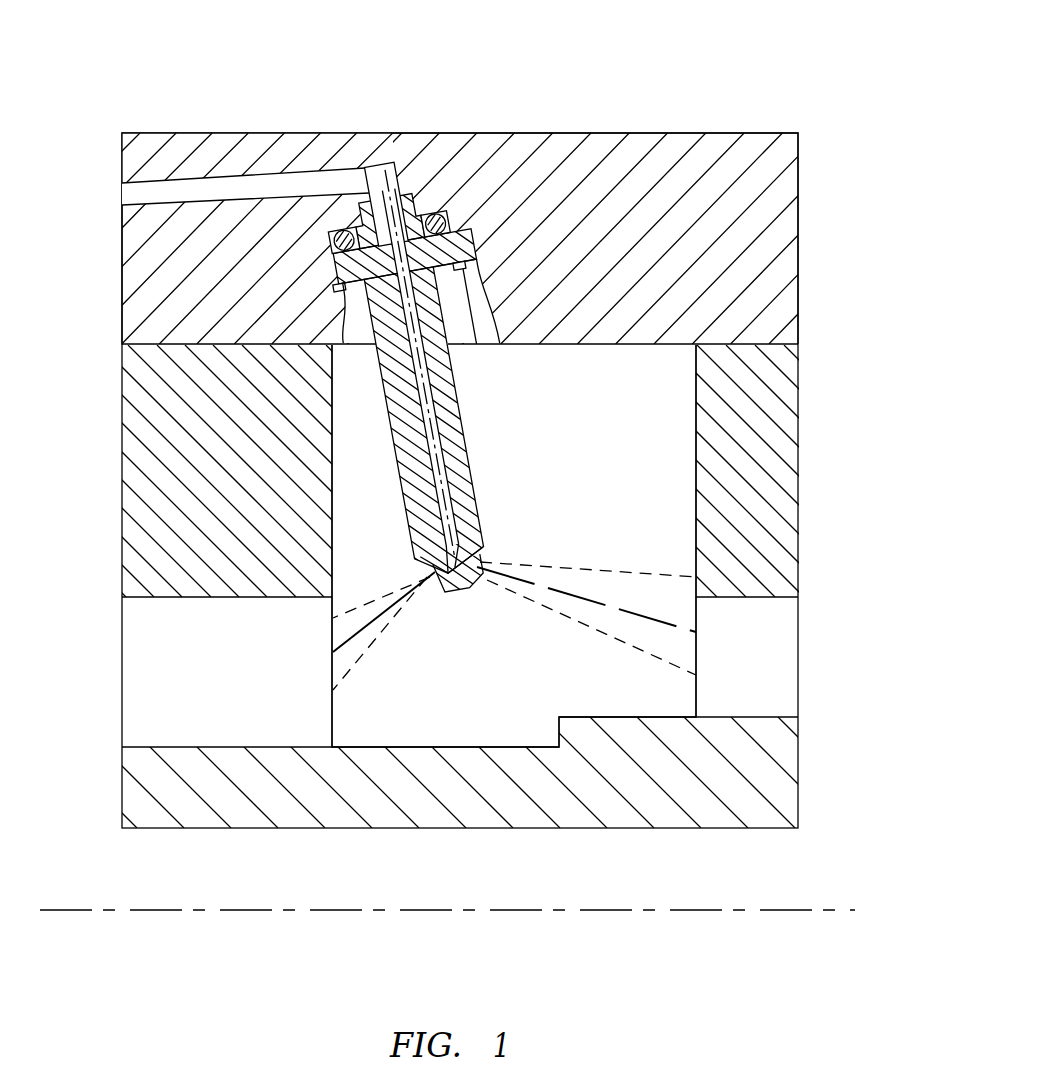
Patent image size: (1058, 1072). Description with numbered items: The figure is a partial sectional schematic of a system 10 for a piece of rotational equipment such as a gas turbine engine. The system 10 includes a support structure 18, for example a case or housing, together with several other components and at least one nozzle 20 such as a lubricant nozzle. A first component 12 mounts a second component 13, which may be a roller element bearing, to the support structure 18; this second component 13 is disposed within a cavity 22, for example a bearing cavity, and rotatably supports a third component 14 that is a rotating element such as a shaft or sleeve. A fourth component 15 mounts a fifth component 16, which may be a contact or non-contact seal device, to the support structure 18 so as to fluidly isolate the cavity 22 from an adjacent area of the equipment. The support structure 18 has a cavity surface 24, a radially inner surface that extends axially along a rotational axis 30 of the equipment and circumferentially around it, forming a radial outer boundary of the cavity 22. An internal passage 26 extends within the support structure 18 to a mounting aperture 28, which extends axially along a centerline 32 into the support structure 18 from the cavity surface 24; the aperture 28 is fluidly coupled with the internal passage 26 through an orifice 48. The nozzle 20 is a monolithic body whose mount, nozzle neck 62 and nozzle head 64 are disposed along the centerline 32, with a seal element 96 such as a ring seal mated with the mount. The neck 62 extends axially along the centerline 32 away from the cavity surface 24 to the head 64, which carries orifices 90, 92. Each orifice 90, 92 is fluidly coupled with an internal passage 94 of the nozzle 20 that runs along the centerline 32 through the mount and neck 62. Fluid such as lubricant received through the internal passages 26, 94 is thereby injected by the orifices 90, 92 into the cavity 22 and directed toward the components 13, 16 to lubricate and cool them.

The system 10 is at (738, 76).
The first component 12 is at (118, 498).
The second component 13 is at (118, 683).
The third component 14 is at (118, 800).
The fourth component 15 is at (802, 455).
The fifth component 16 is at (802, 637).
The support structure 18 is at (800, 200).
The nozzle 20 is at (470, 452).
The cavity 22 is at (600, 507).
The cavity surface 24 is at (585, 346).
The internal passage 26 is at (178, 188).
The mounting aperture 28 is at (358, 337).
The rotational axis 30 is at (742, 913).
The centerline 32 is at (460, 522).
The orifice 48 is at (372, 195).
The nozzle neck 62 is at (472, 404).
The nozzle head 64 is at (452, 605).
The orifice 90 is at (430, 593).
The orifice 92 is at (485, 582).
The internal passage 94 is at (425, 490).
The seal element 96 is at (447, 220).